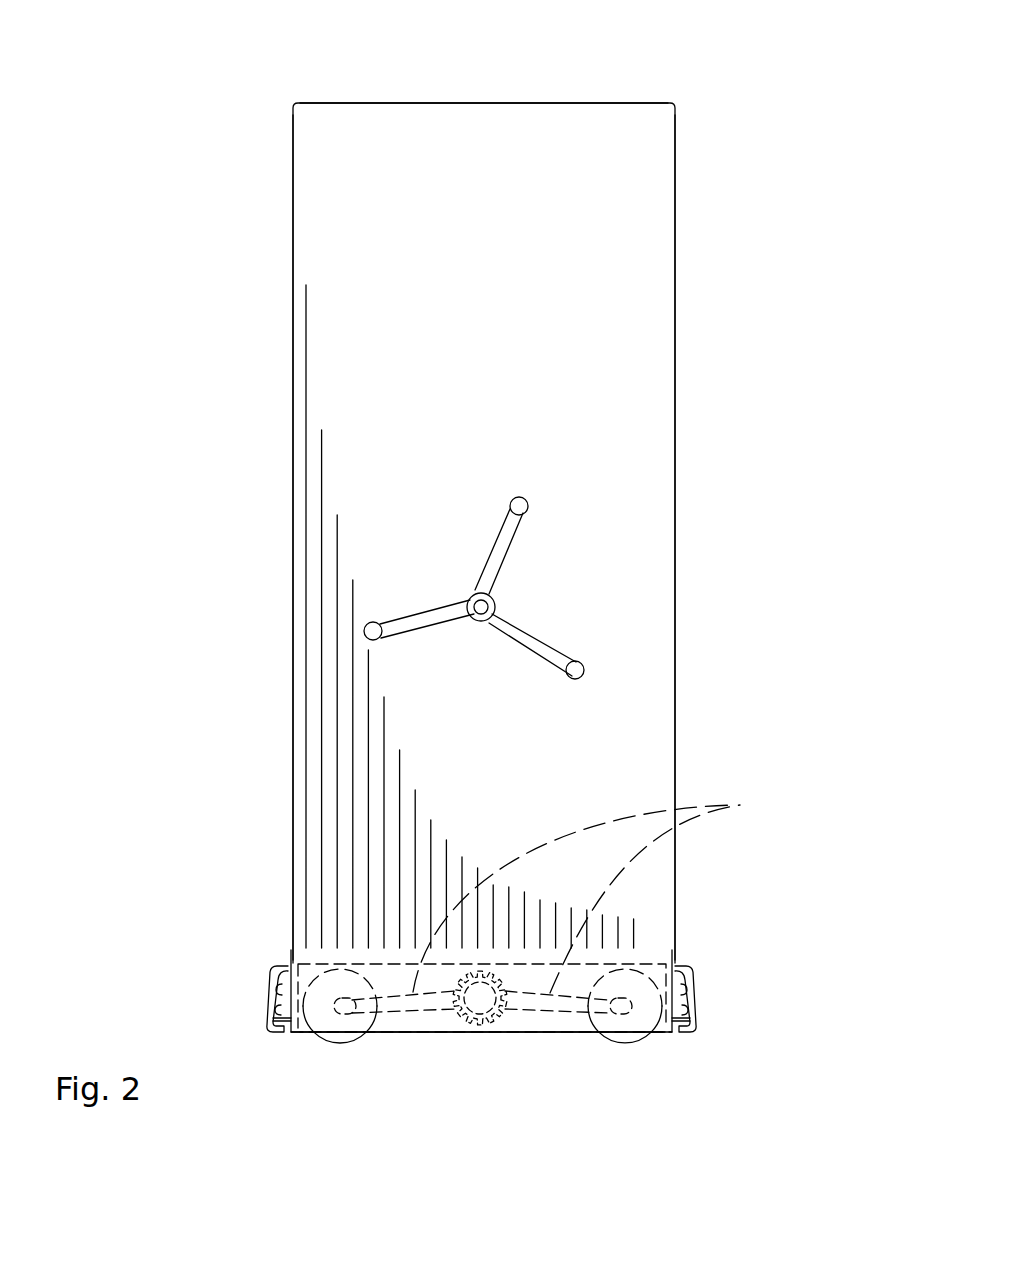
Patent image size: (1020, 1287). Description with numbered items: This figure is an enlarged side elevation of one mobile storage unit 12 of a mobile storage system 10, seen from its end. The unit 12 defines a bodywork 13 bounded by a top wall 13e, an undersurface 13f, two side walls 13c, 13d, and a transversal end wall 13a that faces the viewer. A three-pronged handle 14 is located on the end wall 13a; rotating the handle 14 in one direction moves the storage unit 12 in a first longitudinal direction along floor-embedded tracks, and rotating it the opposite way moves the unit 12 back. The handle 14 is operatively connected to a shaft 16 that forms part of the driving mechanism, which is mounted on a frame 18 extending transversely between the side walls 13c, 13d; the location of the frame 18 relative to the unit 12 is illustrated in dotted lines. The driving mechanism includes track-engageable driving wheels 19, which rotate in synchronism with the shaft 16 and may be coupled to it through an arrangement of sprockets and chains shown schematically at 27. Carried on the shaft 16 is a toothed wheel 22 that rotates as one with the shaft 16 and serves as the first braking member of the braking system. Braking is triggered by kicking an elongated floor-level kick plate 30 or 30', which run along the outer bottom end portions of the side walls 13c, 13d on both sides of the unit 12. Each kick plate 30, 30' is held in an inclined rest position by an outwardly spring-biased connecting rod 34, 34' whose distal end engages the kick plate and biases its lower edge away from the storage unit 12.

The mobile storage system 10 is at (758, 309).
The mobile storage unit 12 is at (663, 194).
The bodywork 13 is at (534, 134).
The end wall 13a is at (509, 279).
The side wall 13c is at (675, 412).
The side wall 13d is at (292, 382).
The top wall 13e is at (590, 103).
The undersurface 13f is at (430, 1034).
The three-pronged handle 14 is at (505, 553).
The shaft 16 is at (470, 1040).
The frame 18 is at (672, 975).
The driving wheels 19 is at (340, 1048).
The toothed wheel 22 is at (495, 1018).
The arrangement of sprockets and chains 27 is at (728, 802).
The kick plate 30 is at (723, 986).
The kick plate 30' is at (227, 983).
The connecting rod 34 is at (705, 1050).
The connecting rod 34' is at (247, 1055).